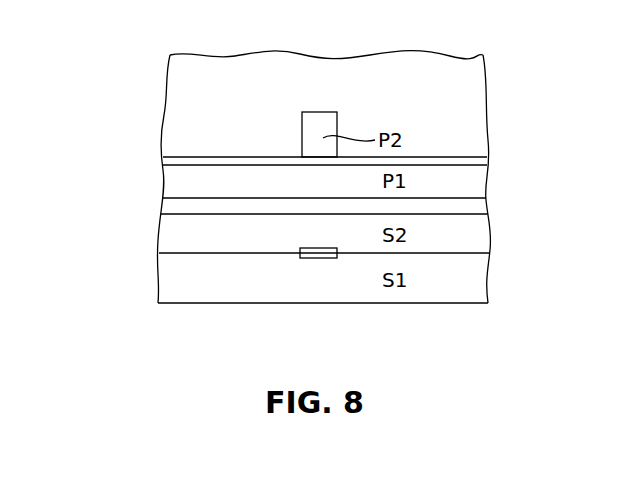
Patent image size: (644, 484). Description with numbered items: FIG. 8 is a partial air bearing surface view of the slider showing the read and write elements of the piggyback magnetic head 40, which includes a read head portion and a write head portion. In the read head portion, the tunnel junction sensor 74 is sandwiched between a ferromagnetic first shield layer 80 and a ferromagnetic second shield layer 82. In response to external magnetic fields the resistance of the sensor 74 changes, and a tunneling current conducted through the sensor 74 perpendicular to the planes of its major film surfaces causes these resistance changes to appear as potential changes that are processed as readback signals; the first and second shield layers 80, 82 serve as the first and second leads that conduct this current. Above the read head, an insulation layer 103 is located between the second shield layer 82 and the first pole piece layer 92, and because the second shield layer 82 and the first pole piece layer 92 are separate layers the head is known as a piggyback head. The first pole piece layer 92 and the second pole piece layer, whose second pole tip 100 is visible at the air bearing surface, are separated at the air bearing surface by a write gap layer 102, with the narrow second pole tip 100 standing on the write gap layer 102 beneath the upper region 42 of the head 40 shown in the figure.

The piggyback magnetic head 40 is at (505, 70).
The top layer 42 is at (170, 83).
The second pole tip 100 is at (320, 122).
The write gap layer 102 is at (237, 157).
The first pole piece layer 92 is at (170, 180).
The insulation layer 103 is at (478, 207).
The second shield layer 82 is at (165, 232).
The first shield layer 80 is at (478, 287).
The tunnel junction sensor 74 is at (317, 257).